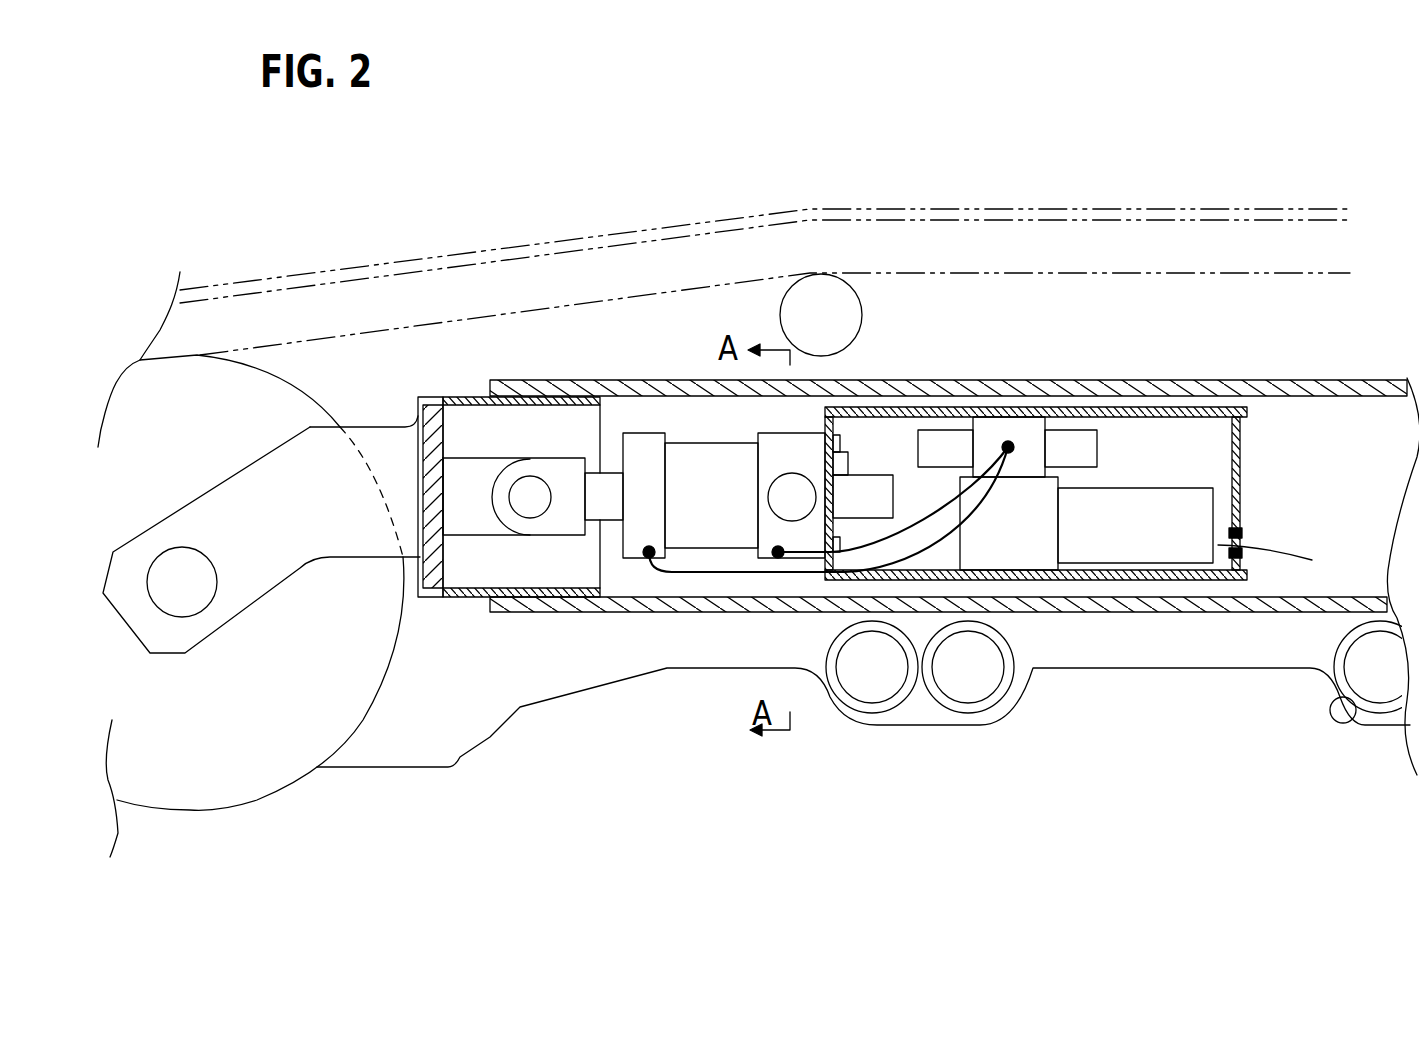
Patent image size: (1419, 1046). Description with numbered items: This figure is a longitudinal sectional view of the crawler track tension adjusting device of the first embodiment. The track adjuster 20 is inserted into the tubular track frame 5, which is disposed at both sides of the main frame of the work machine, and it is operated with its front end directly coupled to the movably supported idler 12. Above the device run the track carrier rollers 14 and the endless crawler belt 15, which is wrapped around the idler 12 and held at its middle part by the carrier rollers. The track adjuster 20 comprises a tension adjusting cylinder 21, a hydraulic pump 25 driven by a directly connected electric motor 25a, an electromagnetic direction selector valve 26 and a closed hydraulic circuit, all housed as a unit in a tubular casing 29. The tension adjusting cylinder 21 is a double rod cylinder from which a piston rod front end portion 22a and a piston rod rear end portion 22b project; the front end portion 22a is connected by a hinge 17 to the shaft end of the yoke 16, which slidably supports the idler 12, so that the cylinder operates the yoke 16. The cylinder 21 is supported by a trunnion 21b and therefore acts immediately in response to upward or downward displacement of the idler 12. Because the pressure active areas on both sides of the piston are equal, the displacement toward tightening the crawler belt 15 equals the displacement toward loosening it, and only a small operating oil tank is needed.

The track frame 5 is at (1243, 612).
The idler 12 is at (253, 743).
The track carrier rollers 14 is at (821, 300).
The endless crawler belt 15 is at (943, 232).
The yoke 16 is at (387, 440).
The hinge 17 is at (563, 470).
The track adjuster 20 is at (652, 614).
The tension adjusting cylinder 21 is at (725, 530).
The trunnion 21b is at (802, 490).
The piston rod front end portion 22a is at (605, 487).
The piston rod rear end portion 22b is at (877, 503).
The hydraulic pump 25 is at (1037, 553).
The electric motor 25a is at (1193, 527).
The electromagnetic direction selector valve 26 is at (1025, 440).
The tubular casing 29 is at (1138, 403).